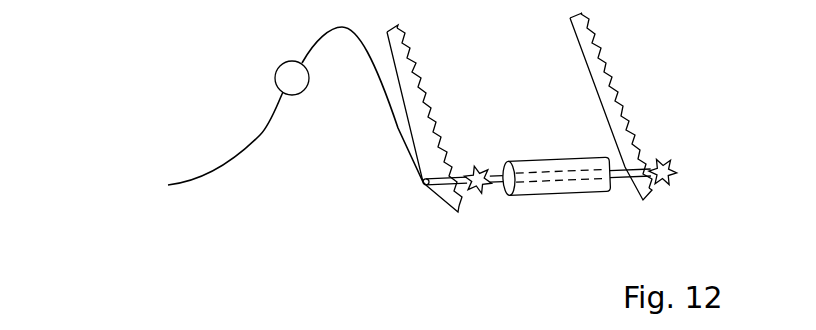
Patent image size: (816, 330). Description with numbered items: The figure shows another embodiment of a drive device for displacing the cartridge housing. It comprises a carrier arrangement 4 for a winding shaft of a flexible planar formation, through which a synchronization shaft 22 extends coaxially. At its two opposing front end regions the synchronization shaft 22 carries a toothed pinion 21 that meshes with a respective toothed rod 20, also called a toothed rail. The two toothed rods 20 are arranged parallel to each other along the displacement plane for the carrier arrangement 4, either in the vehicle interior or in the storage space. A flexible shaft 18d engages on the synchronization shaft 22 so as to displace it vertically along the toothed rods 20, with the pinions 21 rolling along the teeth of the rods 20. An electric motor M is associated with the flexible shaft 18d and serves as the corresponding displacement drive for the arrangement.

The flexible shaft 18d is at (260, 135).
The toothed rod 20 is at (437, 117).
The carrier arrangement 4 is at (553, 163).
The toothed pinion 21 is at (488, 206).
The synchronization shaft 22 is at (618, 183).